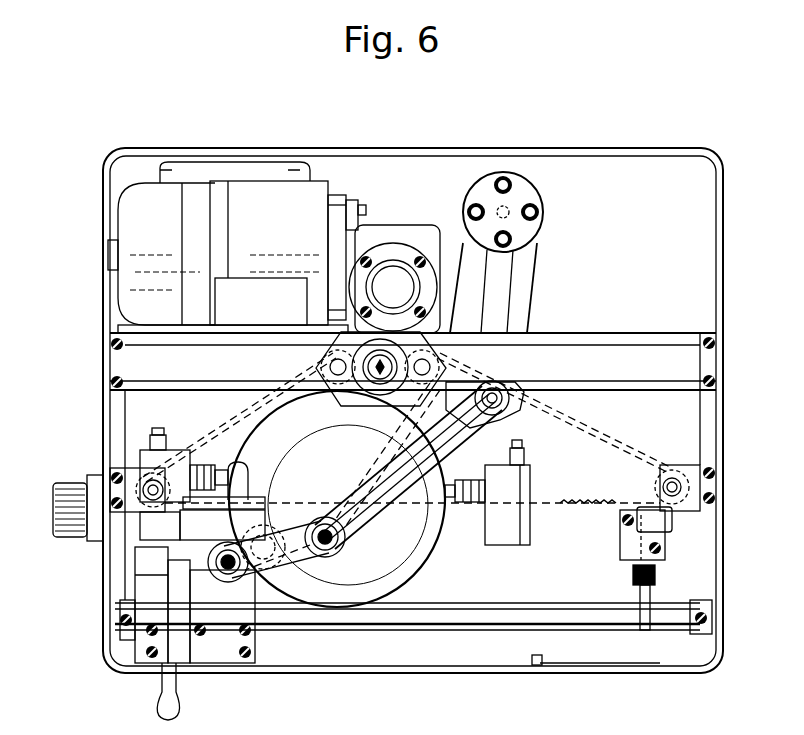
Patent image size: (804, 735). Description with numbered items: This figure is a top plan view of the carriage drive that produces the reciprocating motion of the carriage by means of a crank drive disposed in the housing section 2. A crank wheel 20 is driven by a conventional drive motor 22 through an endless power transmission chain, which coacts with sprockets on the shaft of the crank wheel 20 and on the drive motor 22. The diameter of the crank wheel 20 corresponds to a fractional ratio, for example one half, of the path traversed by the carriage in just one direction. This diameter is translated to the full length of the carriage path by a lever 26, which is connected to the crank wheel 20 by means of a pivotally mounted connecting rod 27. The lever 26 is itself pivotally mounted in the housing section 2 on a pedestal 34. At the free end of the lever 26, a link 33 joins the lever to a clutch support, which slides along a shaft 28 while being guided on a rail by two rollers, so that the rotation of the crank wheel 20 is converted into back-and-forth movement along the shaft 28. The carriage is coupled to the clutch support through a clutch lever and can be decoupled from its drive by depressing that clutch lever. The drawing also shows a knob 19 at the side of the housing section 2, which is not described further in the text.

The housing section 2 is at (145, 150).
The knob 19 is at (78, 541).
The crank wheel 20 is at (415, 572).
The drive motor 22 is at (133, 290).
The lever 26 is at (530, 306).
The connecting rod 27 is at (308, 490).
The shaft 28 is at (447, 625).
The link 33 is at (345, 582).
The pedestal 34 is at (510, 207).